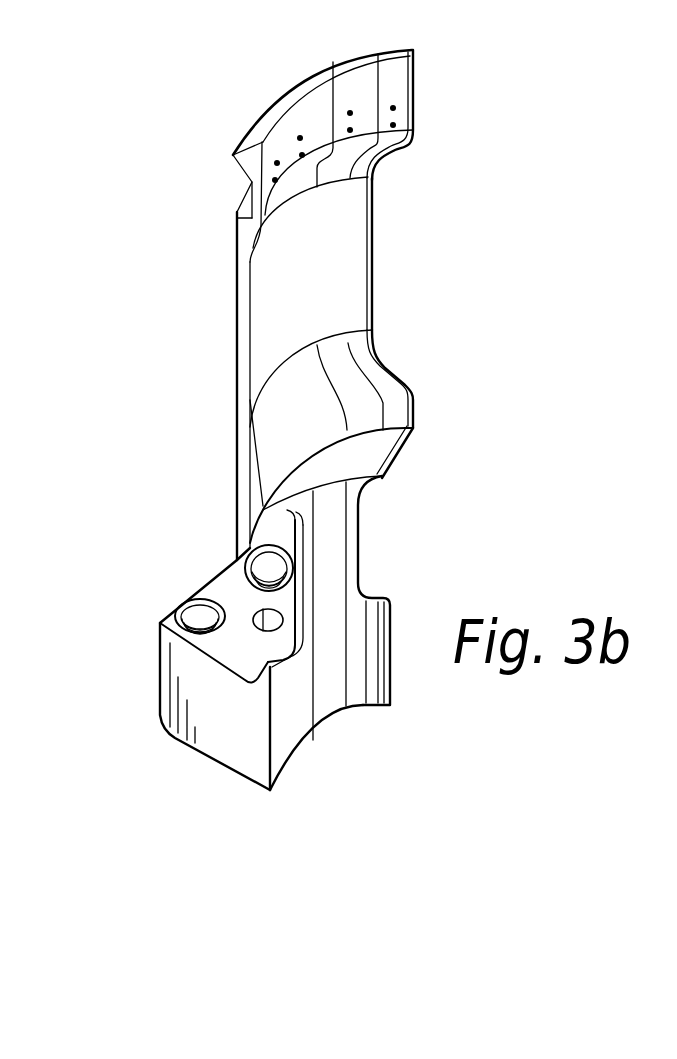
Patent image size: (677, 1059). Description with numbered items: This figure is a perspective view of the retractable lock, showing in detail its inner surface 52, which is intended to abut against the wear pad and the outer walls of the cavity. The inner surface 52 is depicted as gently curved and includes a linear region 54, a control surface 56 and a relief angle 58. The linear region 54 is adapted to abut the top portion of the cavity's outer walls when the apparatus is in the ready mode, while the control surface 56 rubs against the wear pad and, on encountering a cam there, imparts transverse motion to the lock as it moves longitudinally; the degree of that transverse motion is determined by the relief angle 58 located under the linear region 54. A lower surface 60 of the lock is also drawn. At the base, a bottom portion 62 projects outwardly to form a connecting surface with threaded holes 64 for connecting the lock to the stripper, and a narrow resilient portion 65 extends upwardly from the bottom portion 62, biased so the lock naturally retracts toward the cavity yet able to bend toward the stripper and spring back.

The inner surface 52 is at (410, 268).
The linear region 54 is at (373, 101).
The control surface 56 is at (377, 425).
The relief angle 58 is at (380, 152).
The lower flange corner 60 is at (410, 428).
The bottom portion 62 is at (243, 733).
The threaded holes 64 is at (158, 613).
The resilient portion 65 is at (398, 553).